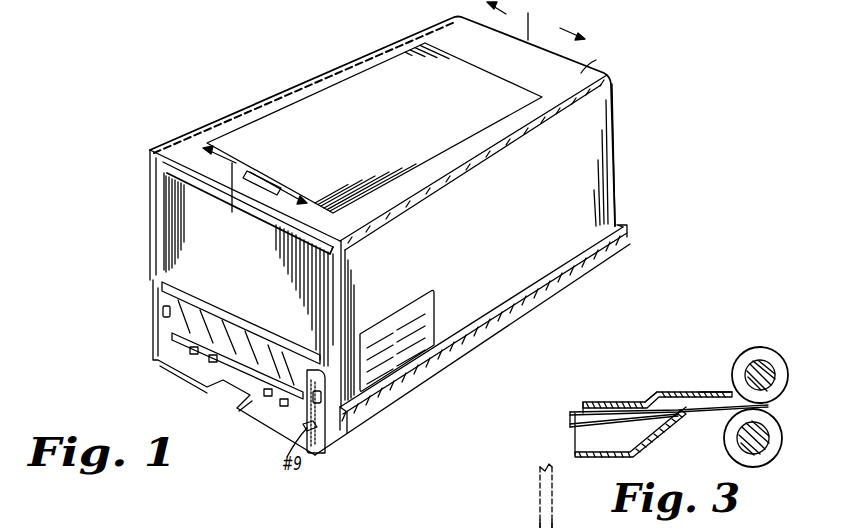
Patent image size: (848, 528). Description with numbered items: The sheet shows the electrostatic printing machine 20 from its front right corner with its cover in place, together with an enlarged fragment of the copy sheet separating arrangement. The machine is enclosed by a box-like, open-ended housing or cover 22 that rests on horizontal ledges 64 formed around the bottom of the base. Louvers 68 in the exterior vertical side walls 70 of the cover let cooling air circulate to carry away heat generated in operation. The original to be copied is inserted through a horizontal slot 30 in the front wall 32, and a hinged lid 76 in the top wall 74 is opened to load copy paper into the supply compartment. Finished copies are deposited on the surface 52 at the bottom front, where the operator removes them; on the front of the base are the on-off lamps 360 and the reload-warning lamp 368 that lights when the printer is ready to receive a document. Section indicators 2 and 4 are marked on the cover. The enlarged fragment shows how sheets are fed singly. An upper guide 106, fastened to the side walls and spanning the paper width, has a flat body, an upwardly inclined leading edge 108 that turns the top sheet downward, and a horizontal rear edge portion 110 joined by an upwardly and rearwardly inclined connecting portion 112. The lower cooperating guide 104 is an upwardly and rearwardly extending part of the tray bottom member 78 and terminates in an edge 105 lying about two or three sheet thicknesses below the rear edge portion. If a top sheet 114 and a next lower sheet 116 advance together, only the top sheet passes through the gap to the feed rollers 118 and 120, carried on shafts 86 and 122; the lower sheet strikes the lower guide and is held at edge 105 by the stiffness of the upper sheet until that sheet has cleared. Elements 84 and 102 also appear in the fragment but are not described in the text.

In FIG. 1, the electrostatic printing machine 20 is at (175, 147).
In FIG. 1, the housing 22 is at (598, 130).
In FIG. 1, the top wall 74 is at (599, 56).
In FIG. 1, the exterior vertical side walls 70 is at (603, 190).
In FIG. 1, the hinged lid 76 is at (396, 136).
In FIG. 3, the hinged lid 76 is at (540, 493).
In FIG. 1, the front wall 32 is at (259, 251).
In FIG. 1, the horizontal slot 30 is at (244, 316).
In FIG. 1, the reload-warning lamp 368 is at (162, 311).
In FIG. 1, the surface 52 is at (194, 368).
In FIG. 1, the horizontal ledges 64 is at (467, 338).
In FIG. 1, the on-off lamps 360 is at (320, 402).
In FIG. 1, the louvers 68 is at (394, 322).
In FIG. 1, the section line 2 is at (365, 106).
In FIG. 1, the section line 4 is at (417, 107).
In FIG. 3, the guide 106 is at (610, 401).
In FIG. 3, the horizontal rear edge portion 110 is at (585, 401).
In FIG. 3, the connecting portion 112 is at (655, 393).
In FIG. 3, the leading edge 108 is at (733, 392).
In FIG. 3, the top sheet of copy paper 114 is at (570, 413).
In FIG. 3, the next lower sheet of copy paper 116 is at (569, 425).
In FIG. 3, the lower cooperating guide 104 is at (652, 436).
In FIG. 3, the edge 105 is at (687, 412).
In FIG. 3, the bottom member 78 is at (596, 457).
In FIG. 3, the feed roller 118 is at (742, 353).
In FIG. 3, the shaft 86 is at (764, 366).
In FIG. 3, the mating feed roller 120 is at (735, 449).
In FIG. 3, the shaft 122 is at (752, 450).
In FIG. 3, the cassette 84 is at (491, 521).
In FIG. 3, the cassette wall 102 is at (525, 520).